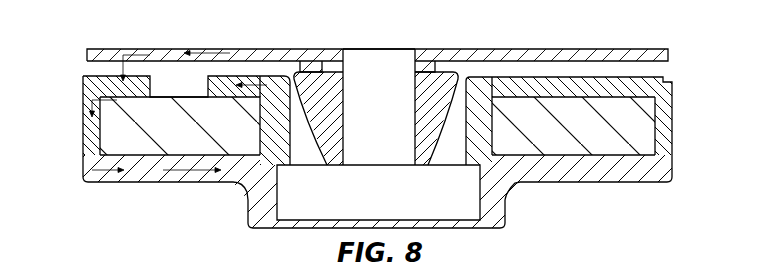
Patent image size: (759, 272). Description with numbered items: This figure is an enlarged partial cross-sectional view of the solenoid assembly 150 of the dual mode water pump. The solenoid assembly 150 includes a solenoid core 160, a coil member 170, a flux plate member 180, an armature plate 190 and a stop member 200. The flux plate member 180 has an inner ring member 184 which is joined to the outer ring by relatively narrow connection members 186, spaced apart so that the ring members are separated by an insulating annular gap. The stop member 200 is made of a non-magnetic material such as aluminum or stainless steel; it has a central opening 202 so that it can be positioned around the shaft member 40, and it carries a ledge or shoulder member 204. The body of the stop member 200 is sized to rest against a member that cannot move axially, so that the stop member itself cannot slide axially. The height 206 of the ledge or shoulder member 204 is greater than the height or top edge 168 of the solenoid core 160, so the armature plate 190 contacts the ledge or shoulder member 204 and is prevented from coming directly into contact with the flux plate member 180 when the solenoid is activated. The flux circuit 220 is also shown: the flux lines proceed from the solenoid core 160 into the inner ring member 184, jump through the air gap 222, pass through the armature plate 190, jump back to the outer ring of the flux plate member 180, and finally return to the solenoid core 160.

The shaft member 40 is at (392, 60).
The solenoid assembly 150 is at (136, 185).
The solenoid core 160 is at (583, 170).
The top edge of the solenoid core 168 is at (277, 76).
The coil member 170 is at (633, 140).
The flux plate member 180 is at (653, 88).
The inner ring member 184 is at (213, 76).
The connection members 186 is at (141, 77).
The armature plate 190 is at (377, 44).
The stop member 200 is at (440, 76).
The central opening 202 is at (338, 74).
The ledge or shoulder member 204 is at (315, 69).
The height of the ledge or shoulder member 206 is at (415, 72).
The flux circuit 220 is at (97, 153).
The air gap 222 is at (98, 68).